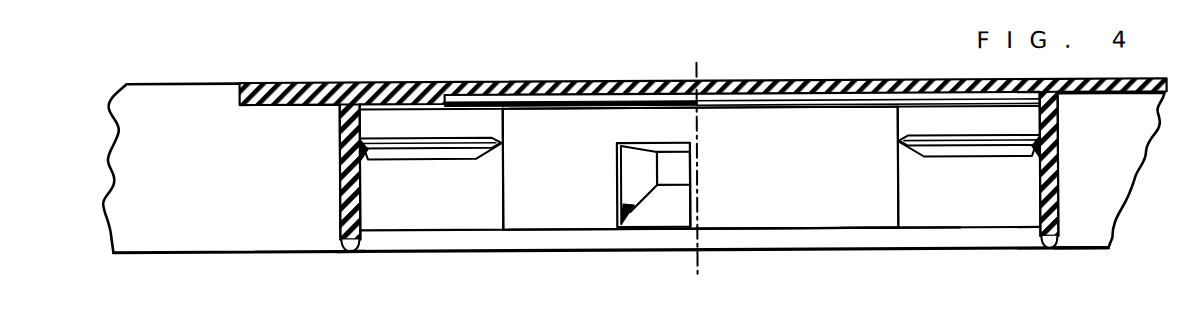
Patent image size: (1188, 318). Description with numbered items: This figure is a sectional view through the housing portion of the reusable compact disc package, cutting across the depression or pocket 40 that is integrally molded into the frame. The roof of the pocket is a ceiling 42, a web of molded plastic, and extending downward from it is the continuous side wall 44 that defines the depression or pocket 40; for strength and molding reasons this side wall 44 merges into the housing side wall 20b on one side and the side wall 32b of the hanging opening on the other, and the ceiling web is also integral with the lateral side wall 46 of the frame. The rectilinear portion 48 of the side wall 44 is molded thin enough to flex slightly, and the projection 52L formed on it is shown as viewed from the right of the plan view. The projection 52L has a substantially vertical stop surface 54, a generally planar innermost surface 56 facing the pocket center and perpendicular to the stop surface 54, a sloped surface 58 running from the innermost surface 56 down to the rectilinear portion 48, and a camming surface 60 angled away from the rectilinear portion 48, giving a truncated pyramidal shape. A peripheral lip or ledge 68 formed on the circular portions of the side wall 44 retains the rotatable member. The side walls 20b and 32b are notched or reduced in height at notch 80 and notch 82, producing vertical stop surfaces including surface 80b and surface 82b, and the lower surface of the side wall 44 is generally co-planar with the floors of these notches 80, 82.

The side wall 20b is at (1050, 188).
The side wall 32b is at (340, 189).
The depression or pocket 40 is at (795, 196).
The ceiling or roof 42 is at (806, 86).
The side wall 44 is at (934, 116).
The side wall 46 is at (943, 236).
The rectilinear portion 48 is at (832, 206).
The projection 52L is at (603, 175).
The stop surface 54 is at (692, 197).
The innermost surface 56 is at (668, 168).
The sloped surface 58 is at (618, 214).
The camming surface 60 is at (622, 160).
The peripheral lip or ledge 68 is at (420, 148).
The notch 80 is at (1040, 244).
The vertical stop surface 80b is at (1060, 246).
The notch 82 is at (340, 237).
The vertical stop surface 82b is at (360, 254).